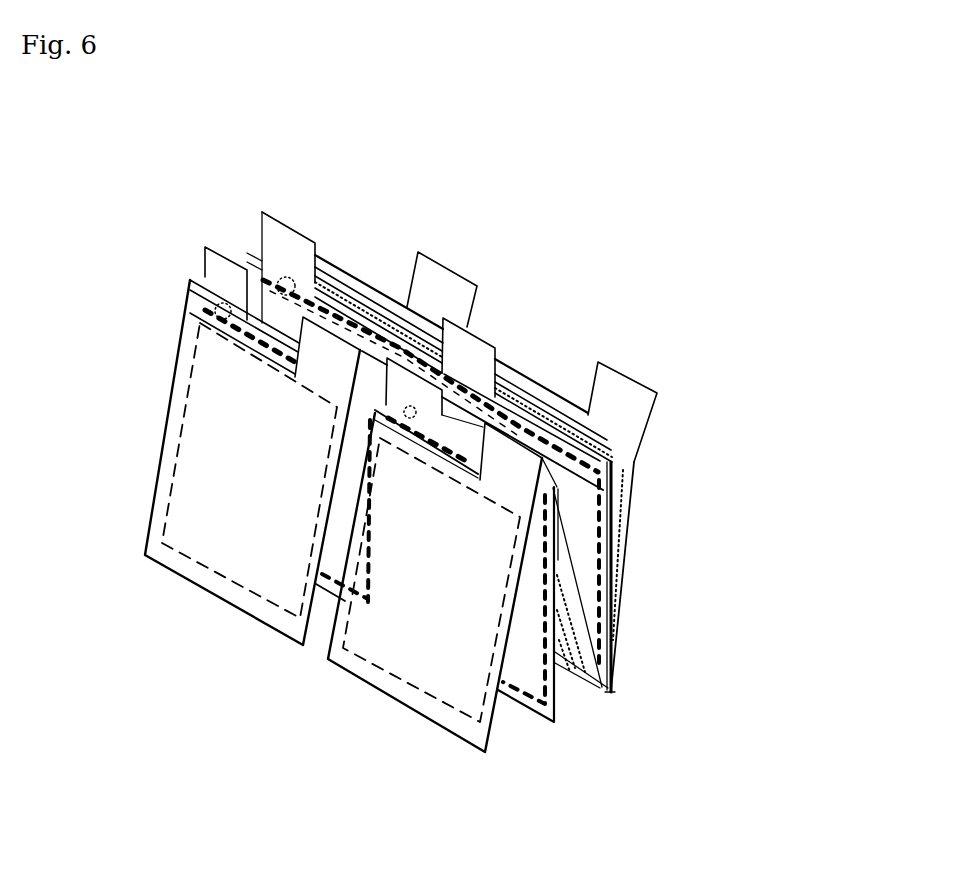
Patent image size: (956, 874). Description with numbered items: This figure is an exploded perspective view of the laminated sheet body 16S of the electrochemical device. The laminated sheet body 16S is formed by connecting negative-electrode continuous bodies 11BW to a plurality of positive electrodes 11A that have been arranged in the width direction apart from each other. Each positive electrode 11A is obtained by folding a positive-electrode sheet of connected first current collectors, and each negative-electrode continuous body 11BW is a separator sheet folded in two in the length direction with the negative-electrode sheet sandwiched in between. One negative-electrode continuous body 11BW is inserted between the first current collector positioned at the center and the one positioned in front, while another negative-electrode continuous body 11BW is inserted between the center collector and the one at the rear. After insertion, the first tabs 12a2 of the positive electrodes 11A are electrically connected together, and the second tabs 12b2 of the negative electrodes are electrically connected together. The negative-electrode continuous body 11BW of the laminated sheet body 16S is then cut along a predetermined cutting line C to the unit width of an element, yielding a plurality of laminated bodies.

The laminated sheet body 16S is at (658, 174).
The positive electrode 11A is at (248, 613).
The negative-electrode continuous body 11BW is at (617, 637).
The first tab 12a2 is at (428, 277).
The second tab 12b2 is at (272, 232).
The cutting line C is at (402, 356).